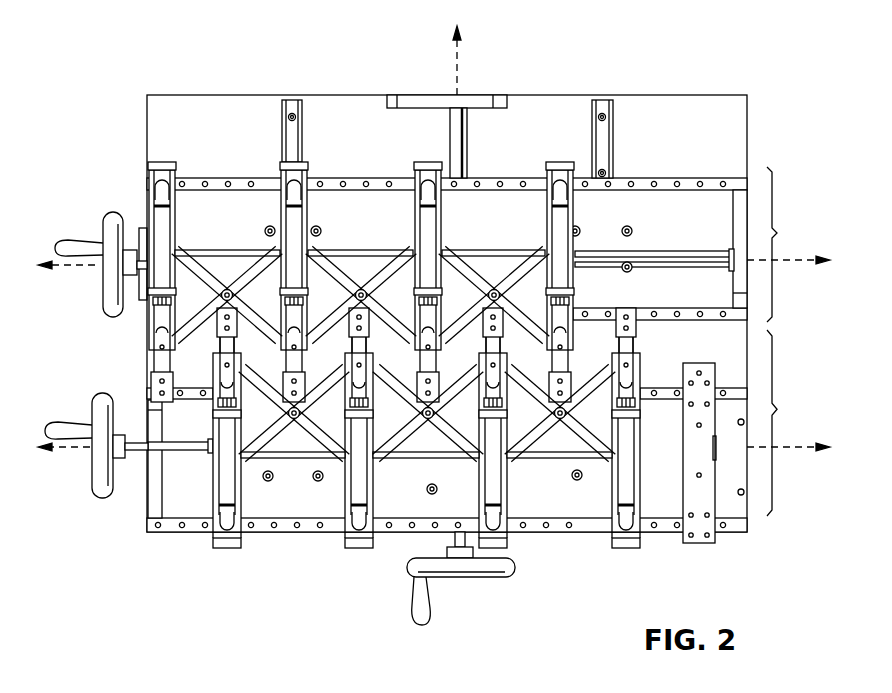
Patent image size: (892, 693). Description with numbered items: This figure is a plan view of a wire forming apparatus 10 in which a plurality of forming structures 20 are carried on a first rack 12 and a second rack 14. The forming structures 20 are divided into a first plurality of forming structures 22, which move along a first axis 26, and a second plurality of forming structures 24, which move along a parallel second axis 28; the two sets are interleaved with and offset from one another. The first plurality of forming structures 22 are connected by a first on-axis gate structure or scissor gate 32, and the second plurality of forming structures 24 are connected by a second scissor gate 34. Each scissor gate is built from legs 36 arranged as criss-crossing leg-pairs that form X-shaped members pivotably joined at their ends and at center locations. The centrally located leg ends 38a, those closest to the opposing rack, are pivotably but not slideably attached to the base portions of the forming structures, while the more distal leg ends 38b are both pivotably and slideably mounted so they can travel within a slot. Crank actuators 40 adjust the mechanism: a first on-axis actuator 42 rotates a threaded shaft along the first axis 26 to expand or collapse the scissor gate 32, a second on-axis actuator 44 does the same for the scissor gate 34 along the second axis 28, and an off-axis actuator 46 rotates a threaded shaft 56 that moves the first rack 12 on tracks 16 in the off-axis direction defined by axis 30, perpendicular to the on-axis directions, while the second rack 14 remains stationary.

The wire forming apparatus 10 is at (745, 82).
The first rack 12 is at (714, 170).
The second rack 14 is at (741, 525).
The tracks 16 is at (292, 102).
The forming structures 20 is at (565, 150).
The first plurality of forming structures 22 is at (788, 244).
The second plurality of forming structures 24 is at (788, 423).
The first axis 26 is at (55, 262).
The second axis 28 is at (60, 430).
The axis 30 is at (455, 79).
The first on-axis gate structure 32 is at (192, 260).
The second on-axis gate structure 34 is at (337, 443).
The legs 36 is at (394, 346).
The centrally located leg ends 38a is at (200, 310).
The distal leg ends 38b is at (263, 272).
The actuators 40 is at (317, 337).
The first on-axis actuator 42 is at (113, 212).
The second on-axis actuator 44 is at (102, 498).
The off-axis actuator 46 is at (512, 568).
The threaded shaft 56 is at (450, 142).